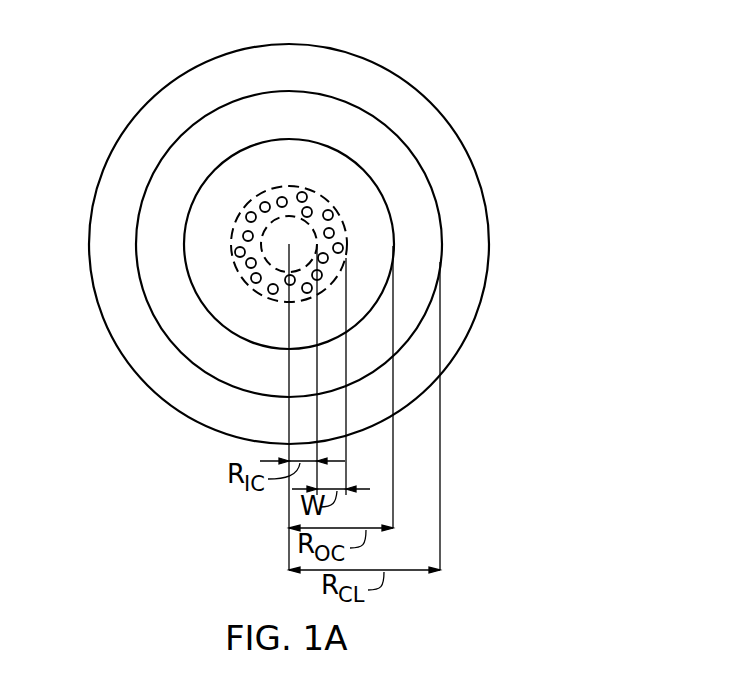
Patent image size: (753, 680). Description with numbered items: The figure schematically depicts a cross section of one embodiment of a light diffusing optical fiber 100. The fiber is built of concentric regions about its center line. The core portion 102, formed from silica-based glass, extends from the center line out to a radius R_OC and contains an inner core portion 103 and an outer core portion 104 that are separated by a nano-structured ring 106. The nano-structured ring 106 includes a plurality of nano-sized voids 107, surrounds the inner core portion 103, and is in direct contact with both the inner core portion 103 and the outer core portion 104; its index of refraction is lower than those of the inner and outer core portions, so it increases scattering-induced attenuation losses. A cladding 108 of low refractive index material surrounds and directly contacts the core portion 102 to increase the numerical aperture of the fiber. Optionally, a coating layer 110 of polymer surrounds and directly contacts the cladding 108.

The light diffusing optical fiber 100 is at (500, 73).
The core portion 102 is at (402, 232).
The inner core portion 103 is at (265, 190).
The outer core portion 104 is at (183, 235).
The nano-structured ring 106 is at (228, 252).
The nano-sized voids 107 is at (334, 214).
The cladding 108 is at (288, 91).
The coating layer 110 is at (148, 100).